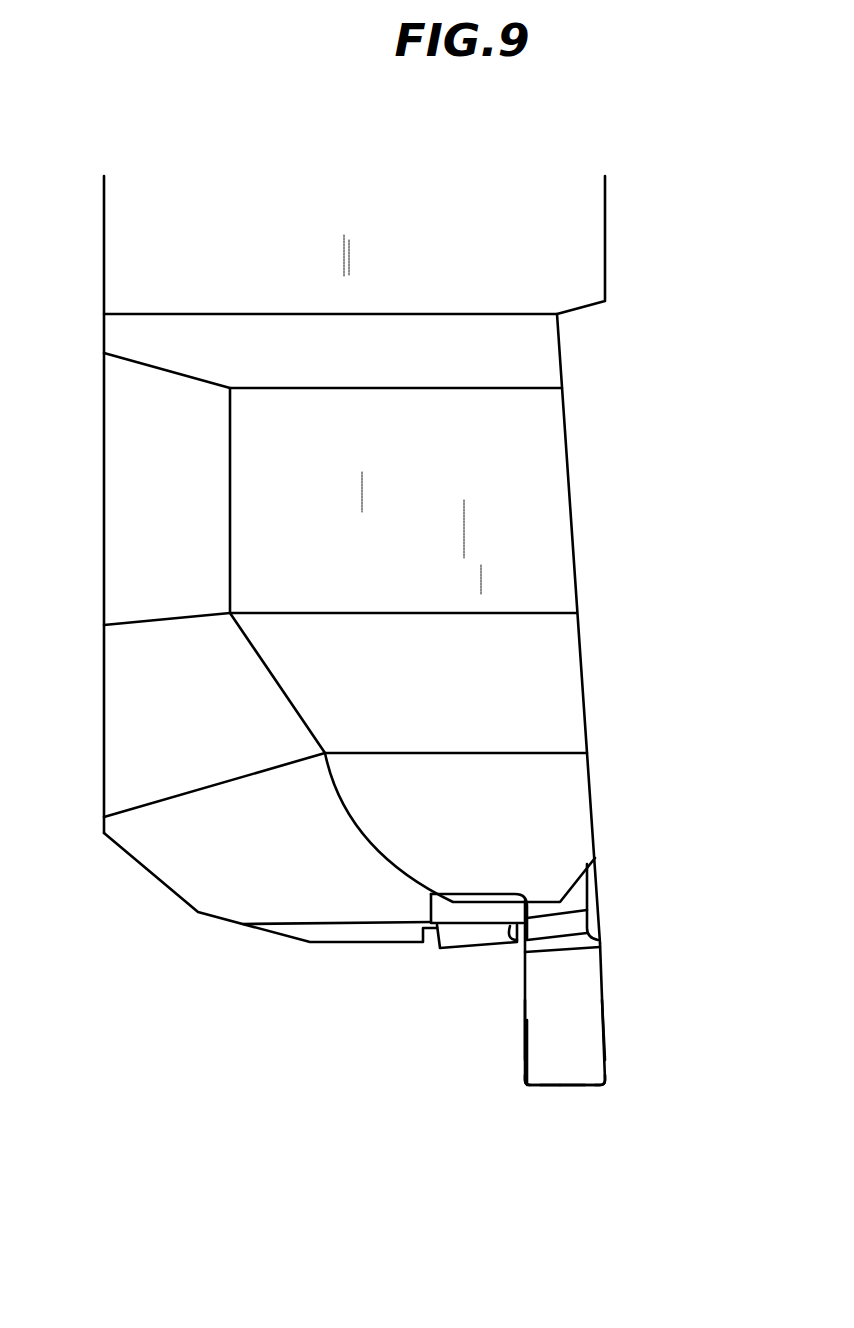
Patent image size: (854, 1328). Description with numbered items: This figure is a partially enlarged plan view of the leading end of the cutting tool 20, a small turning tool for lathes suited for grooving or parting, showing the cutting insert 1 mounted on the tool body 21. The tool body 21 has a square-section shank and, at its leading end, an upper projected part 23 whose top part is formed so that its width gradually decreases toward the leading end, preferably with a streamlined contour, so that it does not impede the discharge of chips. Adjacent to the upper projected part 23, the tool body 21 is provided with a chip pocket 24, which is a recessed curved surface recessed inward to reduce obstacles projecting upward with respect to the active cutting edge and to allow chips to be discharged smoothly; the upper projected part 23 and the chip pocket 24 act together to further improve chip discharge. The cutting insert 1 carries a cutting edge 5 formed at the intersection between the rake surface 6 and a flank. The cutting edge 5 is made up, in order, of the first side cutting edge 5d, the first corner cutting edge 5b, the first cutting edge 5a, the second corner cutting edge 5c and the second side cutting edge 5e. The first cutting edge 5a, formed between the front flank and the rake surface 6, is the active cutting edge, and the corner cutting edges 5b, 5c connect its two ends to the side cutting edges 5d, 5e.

The cutting tool 20 is at (625, 258).
The tool body 21 is at (388, 448).
The upper projected part 23 is at (397, 497).
The chip pocket 24 is at (482, 827).
The cutting insert 1 is at (613, 1068).
The rake surface 6 is at (563, 1055).
The cutting edge 5 is at (570, 1088).
The first cutting edge 5a is at (555, 1088).
The first corner cutting edge 5b is at (607, 1088).
The second corner cutting edge 5c is at (520, 1088).
The first side cutting edge 5d is at (607, 1043).
The second side cutting edge 5e is at (523, 1053).